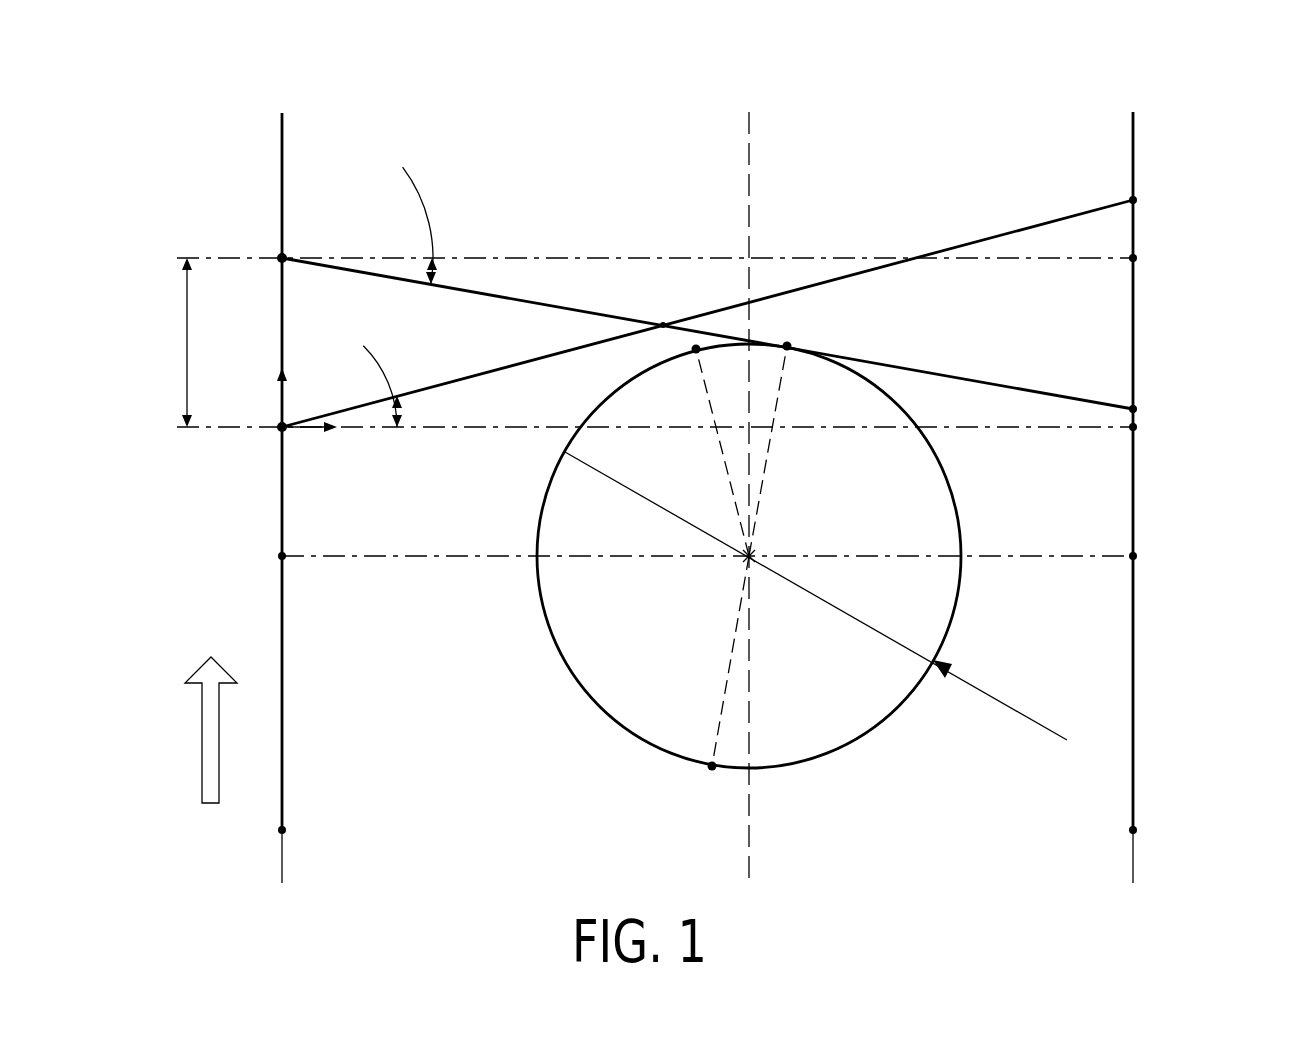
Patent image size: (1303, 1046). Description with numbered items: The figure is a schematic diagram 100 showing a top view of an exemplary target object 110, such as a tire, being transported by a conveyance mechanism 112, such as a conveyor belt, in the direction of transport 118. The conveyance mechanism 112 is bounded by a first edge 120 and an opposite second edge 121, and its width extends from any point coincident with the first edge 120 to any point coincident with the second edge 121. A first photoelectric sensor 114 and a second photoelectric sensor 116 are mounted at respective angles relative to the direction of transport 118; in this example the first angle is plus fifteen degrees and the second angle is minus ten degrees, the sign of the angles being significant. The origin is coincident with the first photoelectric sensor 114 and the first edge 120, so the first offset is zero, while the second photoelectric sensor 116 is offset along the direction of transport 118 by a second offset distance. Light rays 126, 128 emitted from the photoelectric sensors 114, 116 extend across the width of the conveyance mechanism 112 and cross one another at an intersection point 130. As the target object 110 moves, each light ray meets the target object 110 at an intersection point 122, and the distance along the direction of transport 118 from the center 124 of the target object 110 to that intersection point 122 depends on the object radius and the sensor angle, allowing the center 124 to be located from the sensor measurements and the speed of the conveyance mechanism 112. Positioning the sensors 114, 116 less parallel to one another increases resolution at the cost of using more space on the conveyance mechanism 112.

The schematic diagram 100 is at (1218, 108).
The target object 110 is at (942, 465).
The conveyance mechanism 112 is at (841, 826).
The first photoelectric sensor 114 is at (282, 427).
The second photoelectric sensor 116 is at (282, 258).
The direction of transport 118 is at (202, 738).
The first edge 120 is at (282, 637).
The second edge 121 is at (1133, 488).
The intersection point 122 is at (787, 346).
The center 124 is at (752, 553).
The light ray 126 is at (523, 368).
The light ray 128 is at (548, 300).
The intersection point 130 is at (663, 325).